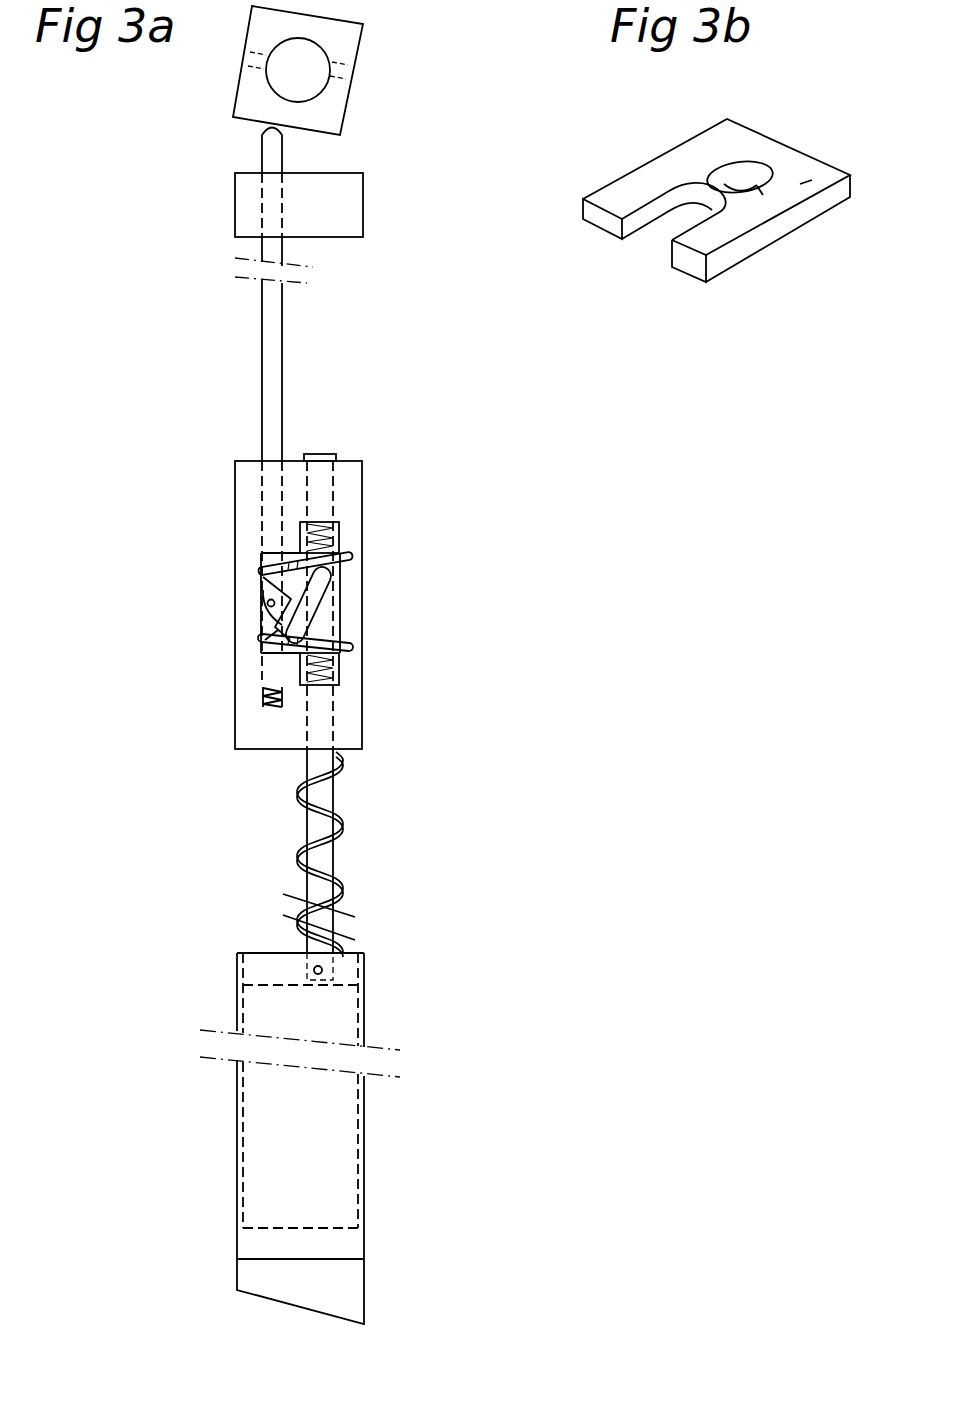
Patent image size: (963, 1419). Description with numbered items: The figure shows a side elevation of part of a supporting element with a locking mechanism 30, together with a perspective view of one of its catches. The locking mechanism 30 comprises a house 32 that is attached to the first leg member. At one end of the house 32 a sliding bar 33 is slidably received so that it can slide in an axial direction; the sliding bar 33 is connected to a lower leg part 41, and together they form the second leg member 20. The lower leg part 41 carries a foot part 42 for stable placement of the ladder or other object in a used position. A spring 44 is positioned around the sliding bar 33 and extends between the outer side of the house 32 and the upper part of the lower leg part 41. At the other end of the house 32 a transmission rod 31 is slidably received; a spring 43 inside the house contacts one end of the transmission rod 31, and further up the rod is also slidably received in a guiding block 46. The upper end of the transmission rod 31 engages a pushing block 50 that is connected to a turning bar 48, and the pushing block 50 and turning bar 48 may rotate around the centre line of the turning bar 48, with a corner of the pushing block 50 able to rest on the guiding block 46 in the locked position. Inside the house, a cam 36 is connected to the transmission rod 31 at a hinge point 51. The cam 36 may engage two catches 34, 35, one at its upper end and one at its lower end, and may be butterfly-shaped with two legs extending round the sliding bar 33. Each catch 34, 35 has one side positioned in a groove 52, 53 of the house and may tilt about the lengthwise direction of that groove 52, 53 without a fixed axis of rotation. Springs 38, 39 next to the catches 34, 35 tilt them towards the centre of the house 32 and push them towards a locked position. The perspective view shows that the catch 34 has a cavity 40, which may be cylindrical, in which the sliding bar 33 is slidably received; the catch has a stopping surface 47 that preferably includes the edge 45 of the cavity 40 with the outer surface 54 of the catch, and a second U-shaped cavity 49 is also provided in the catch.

In FIG. 3A, the second leg member 20 is at (387, 1156).
In FIG. 3A, the locking mechanism 30 is at (380, 605).
In FIG. 3A, the transmission rod 31 is at (268, 343).
In FIG. 3A, the house 32 is at (250, 487).
In FIG. 3A, the sliding bar 33 is at (318, 822).
In FIG. 3A, the catch 34 is at (268, 567).
In FIG. 3B, the catch 34 is at (678, 181).
In FIG. 3A, the catch 35 is at (268, 637).
In FIG. 3A, the cam 36 is at (272, 604).
In FIG. 3A, the spring 38 is at (338, 528).
In FIG. 3A, the spring 39 is at (338, 680).
In FIG. 3B, the cavity 40 is at (757, 185).
In FIG. 3A, the lower leg part 41 is at (287, 1136).
In FIG. 3A, the foot part 42 is at (347, 1288).
In FIG. 3A, the spring 43 is at (272, 700).
In FIG. 3A, the spring 44 is at (342, 833).
In FIG. 3B, the edge 45 is at (763, 158).
In FIG. 3A, the guiding block 46 is at (333, 203).
In FIG. 3B, the stopping surface 47 is at (742, 172).
In FIG. 3A, the turning bar 48 is at (300, 72).
In FIG. 3B, the U-shaped cavity 49 is at (685, 225).
In FIG. 3A, the pushing block 50 is at (330, 115).
In FIG. 3A, the hinge point 51 is at (277, 595).
In FIG. 3A, the groove 52 is at (351, 560).
In FIG. 3A, the groove 53 is at (351, 650).
In FIG. 3B, the outer surface 54 is at (810, 182).